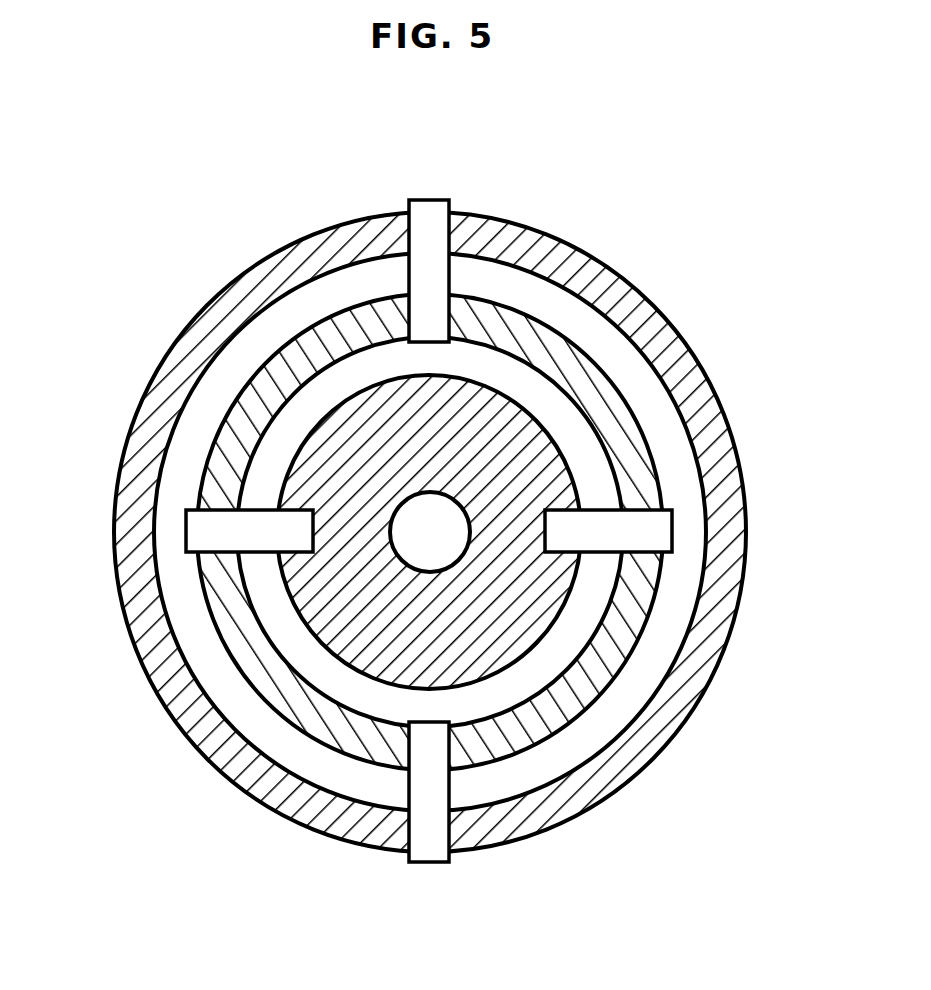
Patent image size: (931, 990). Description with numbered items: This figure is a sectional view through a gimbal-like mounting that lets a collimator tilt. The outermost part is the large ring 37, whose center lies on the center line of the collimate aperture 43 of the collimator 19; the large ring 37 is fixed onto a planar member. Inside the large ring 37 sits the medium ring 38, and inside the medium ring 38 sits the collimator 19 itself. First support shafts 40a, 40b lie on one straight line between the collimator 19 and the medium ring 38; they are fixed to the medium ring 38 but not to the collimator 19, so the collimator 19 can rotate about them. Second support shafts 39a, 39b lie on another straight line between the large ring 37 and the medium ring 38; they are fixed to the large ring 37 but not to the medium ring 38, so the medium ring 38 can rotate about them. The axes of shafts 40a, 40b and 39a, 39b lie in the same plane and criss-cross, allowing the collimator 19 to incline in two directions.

The large ring 37 is at (646, 291).
The medium ring 38 is at (303, 733).
The collimator 19 is at (547, 640).
The collimate aperture 43 is at (402, 497).
The second support shaft 39a is at (429, 864).
The second support shaft 39b is at (447, 202).
The first support shaft 40a is at (673, 520).
The first support shaft 40b is at (186, 542).